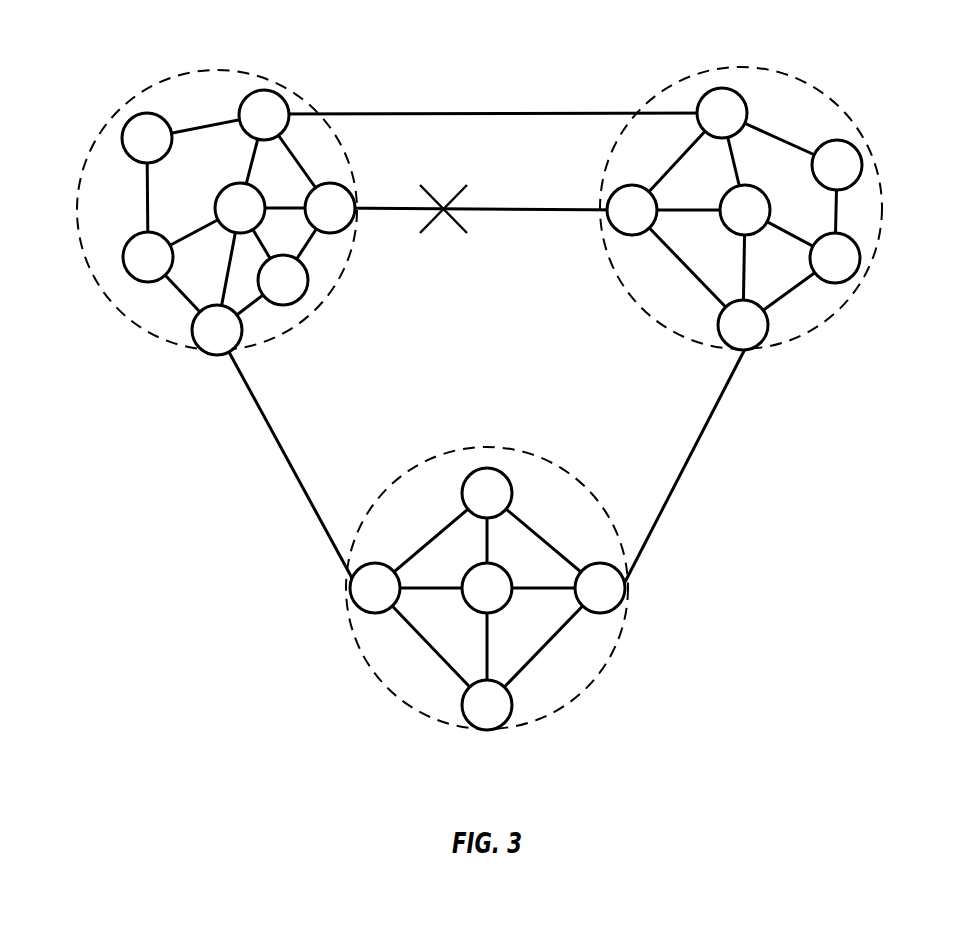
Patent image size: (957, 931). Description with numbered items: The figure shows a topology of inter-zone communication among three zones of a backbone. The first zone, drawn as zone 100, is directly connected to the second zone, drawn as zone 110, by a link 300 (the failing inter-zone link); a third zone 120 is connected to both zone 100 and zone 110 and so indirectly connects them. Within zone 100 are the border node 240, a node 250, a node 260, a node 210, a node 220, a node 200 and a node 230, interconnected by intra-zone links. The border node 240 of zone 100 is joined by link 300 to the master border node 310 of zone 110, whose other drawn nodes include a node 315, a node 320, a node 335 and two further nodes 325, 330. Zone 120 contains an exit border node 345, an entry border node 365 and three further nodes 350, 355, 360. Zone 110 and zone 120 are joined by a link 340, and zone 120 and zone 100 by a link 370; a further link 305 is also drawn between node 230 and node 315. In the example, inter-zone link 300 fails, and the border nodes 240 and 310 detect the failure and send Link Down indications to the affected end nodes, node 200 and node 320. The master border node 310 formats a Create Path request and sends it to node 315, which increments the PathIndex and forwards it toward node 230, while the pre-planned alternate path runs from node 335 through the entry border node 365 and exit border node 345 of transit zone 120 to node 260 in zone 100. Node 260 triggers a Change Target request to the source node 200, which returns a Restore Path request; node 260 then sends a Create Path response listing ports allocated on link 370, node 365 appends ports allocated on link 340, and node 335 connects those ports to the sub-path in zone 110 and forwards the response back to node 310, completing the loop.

The zone 100 is at (236, 193).
The zone 110 is at (773, 193).
The zone 120 is at (509, 568).
The node 200 is at (212, 204).
The node 210 is at (114, 283).
The node 220 is at (109, 122).
The node 230 is at (297, 87).
The border node 240 is at (359, 187).
The node 250 is at (322, 291).
The node 260 is at (177, 348).
The link 300 is at (481, 222).
The Link 1 305 is at (493, 87).
The border node 310 is at (599, 188).
The node 315 is at (704, 135).
The node 320 is at (717, 222).
The Zone 2 node 5 325 is at (817, 145).
The Zone 2 node 4 330 is at (805, 263).
The node 335 is at (708, 341).
The link 340 is at (694, 465).
The exit border node 345 is at (342, 615).
The Zone 3 node 2 350 is at (446, 474).
The Zone 3 node 3 355 is at (457, 601).
The Zone 3 node 4 360 is at (452, 731).
The entry border node 365 is at (631, 615).
The link 370 is at (267, 454).